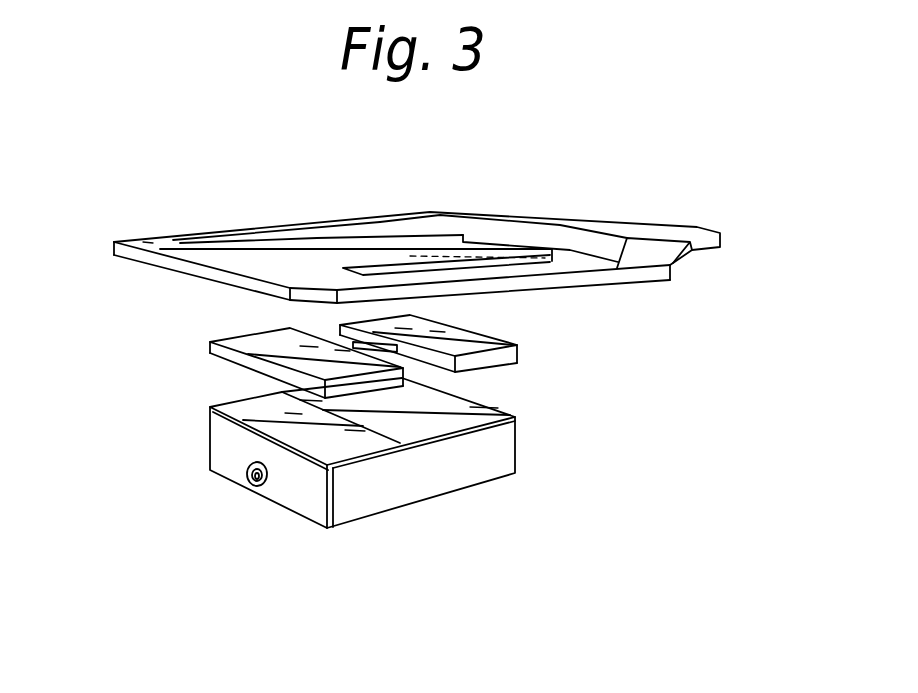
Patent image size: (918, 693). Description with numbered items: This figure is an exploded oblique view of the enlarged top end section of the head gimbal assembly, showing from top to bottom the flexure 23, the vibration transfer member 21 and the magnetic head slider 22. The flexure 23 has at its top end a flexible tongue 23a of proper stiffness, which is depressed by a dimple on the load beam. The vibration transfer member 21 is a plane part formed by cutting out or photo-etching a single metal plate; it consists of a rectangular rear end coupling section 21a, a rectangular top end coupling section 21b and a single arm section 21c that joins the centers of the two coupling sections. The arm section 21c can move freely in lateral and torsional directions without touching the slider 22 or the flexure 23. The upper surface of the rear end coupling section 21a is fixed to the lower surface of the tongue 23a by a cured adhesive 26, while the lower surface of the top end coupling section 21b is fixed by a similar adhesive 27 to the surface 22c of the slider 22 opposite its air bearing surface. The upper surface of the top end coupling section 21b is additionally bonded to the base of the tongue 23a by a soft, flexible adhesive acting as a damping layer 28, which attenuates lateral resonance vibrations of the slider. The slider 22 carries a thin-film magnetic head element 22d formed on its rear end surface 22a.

The vibration transfer member 21 is at (367, 361).
The rear end coupling section 21a is at (472, 361).
The top end coupling section 21b is at (249, 347).
The arm section 21c is at (353, 345).
The magnetic head slider 22 is at (348, 491).
The rear end surface 22a is at (247, 506).
The surface opposite to the ABS 22c is at (460, 420).
The thin-film magnetic head element 22d is at (253, 487).
The flexure 23 is at (417, 217).
The flexible tongue 23a is at (374, 246).
The adhesive 26 is at (463, 338).
The adhesive 27 is at (208, 413).
The damping layer 28 is at (237, 335).